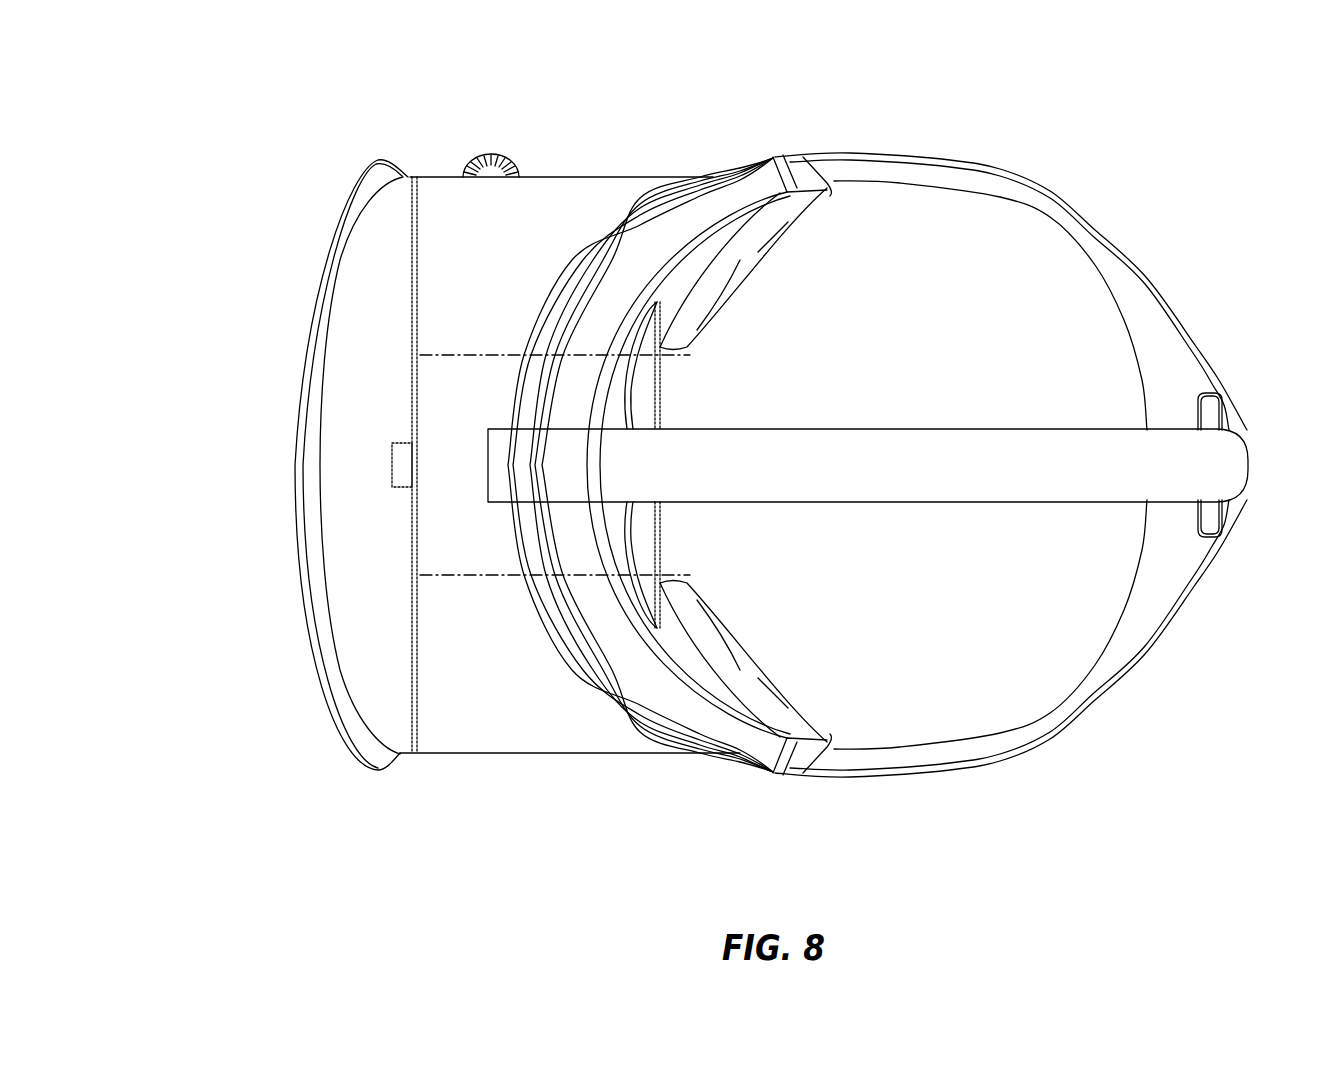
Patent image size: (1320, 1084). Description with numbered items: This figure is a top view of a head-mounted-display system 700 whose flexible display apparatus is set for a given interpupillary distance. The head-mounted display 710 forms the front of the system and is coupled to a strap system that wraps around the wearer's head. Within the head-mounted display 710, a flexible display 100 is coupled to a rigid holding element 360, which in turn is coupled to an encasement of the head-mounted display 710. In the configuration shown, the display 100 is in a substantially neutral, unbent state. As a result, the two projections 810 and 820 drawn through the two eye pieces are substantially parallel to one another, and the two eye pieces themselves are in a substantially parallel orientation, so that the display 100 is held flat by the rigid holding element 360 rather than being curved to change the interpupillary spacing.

The head-mounted-display system 700 is at (226, 110).
The display 100 is at (417, 212).
The projection 810 is at (497, 355).
The projection 820 is at (508, 575).
The rigid holding element 360 is at (402, 467).
The head-mounted display 710 is at (345, 467).